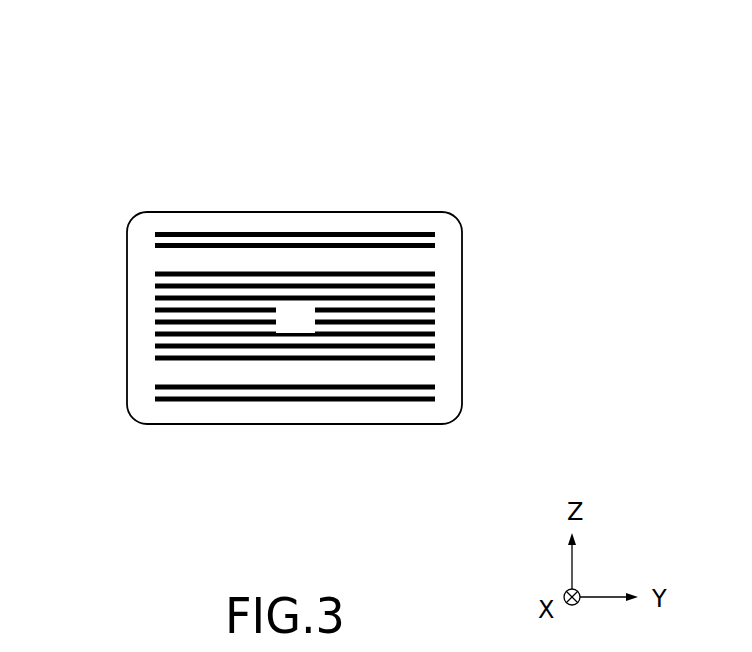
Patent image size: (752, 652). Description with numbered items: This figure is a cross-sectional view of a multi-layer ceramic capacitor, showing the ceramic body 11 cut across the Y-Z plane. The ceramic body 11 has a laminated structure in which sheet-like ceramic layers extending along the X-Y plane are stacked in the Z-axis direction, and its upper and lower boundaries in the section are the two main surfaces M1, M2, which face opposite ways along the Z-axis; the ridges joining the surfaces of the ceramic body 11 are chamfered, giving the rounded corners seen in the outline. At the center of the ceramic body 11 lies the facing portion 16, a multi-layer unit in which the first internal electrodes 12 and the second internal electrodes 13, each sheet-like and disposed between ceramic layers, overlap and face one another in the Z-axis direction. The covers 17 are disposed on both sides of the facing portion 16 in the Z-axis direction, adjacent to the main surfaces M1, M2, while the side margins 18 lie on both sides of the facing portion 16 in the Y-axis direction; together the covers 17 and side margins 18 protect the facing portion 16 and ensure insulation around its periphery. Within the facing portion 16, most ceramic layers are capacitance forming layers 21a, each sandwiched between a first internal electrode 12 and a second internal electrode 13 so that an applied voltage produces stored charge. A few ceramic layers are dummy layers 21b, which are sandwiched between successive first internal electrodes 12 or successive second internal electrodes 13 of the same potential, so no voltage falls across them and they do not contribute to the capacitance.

The ceramic body 11 is at (138, 168).
The first internal electrodes 12 is at (186, 386).
The second internal electrodes 13 is at (398, 399).
The facing portion 16 is at (295, 317).
The covers 17 is at (313, 218).
The side margins 18 is at (140, 320).
The capacitance forming layers 21a is at (155, 283).
The dummy layers 21b is at (168, 374).
The main surface M1 is at (273, 211).
The main surface M2 is at (273, 425).